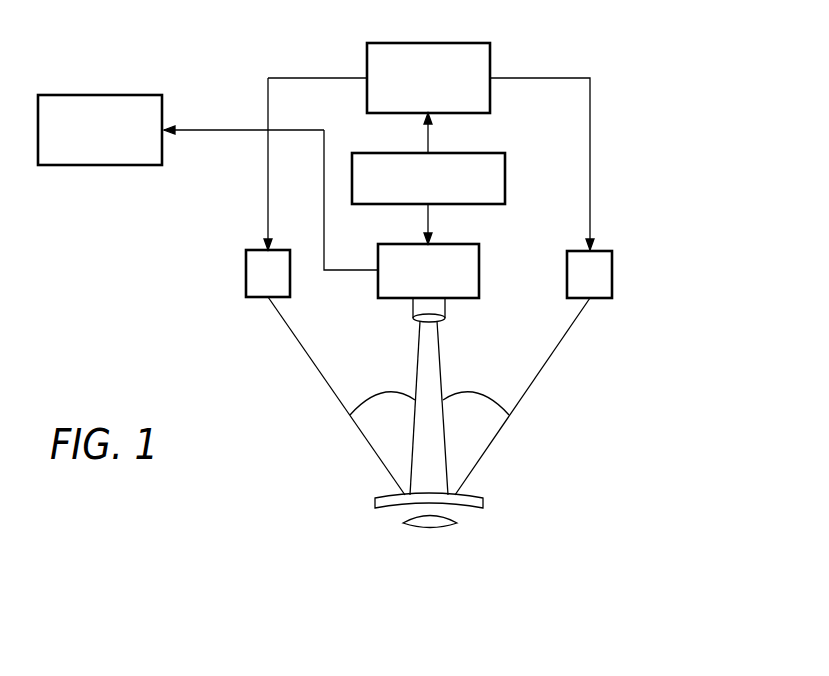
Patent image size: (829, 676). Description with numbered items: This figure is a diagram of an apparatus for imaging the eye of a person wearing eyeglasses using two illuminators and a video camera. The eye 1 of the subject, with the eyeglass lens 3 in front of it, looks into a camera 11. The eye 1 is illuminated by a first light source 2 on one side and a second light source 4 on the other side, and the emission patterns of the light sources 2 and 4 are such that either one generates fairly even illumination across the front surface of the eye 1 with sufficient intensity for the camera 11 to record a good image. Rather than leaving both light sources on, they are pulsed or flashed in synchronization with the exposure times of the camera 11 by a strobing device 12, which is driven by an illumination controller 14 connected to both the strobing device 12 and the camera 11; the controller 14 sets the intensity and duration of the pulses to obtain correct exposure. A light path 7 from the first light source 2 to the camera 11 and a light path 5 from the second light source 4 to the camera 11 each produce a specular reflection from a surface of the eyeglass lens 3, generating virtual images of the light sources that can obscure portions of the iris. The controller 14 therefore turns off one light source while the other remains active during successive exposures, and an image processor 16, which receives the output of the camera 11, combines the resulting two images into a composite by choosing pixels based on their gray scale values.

The eye 1 is at (385, 497).
The first light source 2 is at (245, 268).
The eyeglass lens 3 is at (428, 528).
The second light source 4 is at (613, 270).
The light path 5 is at (476, 394).
The light path 7 is at (382, 395).
The camera 11 is at (480, 264).
The strobing device 12 is at (480, 43).
The illumination controller 14 is at (506, 171).
The image processor 16 is at (47, 93).